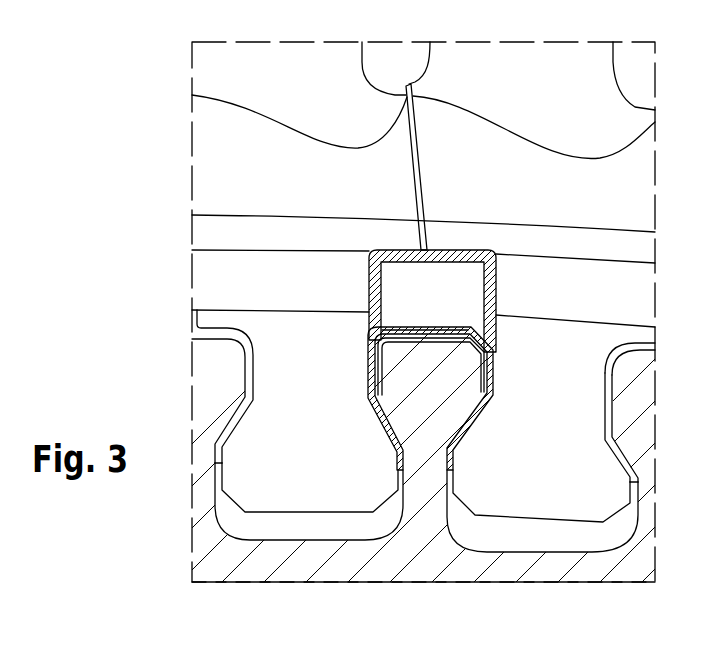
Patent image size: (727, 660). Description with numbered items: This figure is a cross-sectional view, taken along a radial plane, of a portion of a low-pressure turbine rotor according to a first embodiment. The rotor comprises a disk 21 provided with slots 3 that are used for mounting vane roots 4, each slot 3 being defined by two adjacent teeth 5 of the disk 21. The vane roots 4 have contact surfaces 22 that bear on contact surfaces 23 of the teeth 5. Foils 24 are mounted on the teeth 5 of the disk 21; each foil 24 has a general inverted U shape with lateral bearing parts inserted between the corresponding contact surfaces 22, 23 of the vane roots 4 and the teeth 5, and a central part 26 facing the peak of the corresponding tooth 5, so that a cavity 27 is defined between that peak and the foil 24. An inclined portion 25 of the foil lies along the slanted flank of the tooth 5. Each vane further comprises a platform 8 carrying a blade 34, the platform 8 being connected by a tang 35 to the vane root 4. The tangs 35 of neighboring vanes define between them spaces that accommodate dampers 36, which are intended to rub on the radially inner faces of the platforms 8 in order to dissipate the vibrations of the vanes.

The slot 3 is at (272, 527).
The vane root 4 is at (297, 413).
The tooth 5 is at (437, 392).
The platform 8 is at (603, 247).
The disk 21 is at (503, 564).
The contact surface of vane root 22 is at (488, 417).
The contact surface of tooth 23 is at (398, 427).
The foil 24 is at (492, 372).
The inclined portion 25 is at (470, 426).
The central part 26 is at (446, 338).
The cavity 27 is at (394, 338).
The blade 34 is at (276, 82).
The tang 35 is at (252, 275).
The damper 36 is at (465, 258).